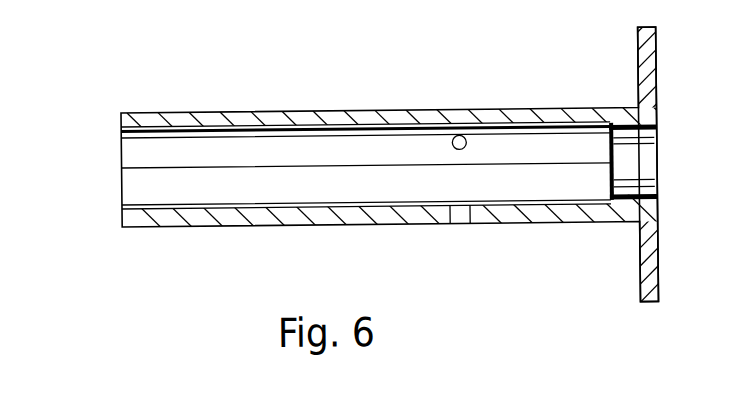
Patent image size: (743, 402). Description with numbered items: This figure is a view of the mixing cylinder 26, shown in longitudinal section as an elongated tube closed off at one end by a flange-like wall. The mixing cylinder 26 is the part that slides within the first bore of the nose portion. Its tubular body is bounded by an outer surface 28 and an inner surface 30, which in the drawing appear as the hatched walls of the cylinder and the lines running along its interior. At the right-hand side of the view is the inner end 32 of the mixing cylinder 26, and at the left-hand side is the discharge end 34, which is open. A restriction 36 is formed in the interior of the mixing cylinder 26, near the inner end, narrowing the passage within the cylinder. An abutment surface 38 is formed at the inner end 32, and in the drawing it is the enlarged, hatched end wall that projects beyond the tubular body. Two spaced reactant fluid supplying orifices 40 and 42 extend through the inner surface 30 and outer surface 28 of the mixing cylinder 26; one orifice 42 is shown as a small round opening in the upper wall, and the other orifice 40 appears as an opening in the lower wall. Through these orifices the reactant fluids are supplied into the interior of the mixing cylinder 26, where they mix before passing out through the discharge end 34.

The mixing cylinder 26 is at (379, 98).
The outer surface 28 is at (213, 113).
The inner surface 30 is at (150, 130).
The inner end 32 is at (653, 178).
The discharge end 34 is at (116, 191).
The restriction 36 is at (590, 133).
The abutment surface 38 is at (657, 92).
The reactant fluid supplying orifice 40 is at (459, 230).
The reactant fluid supplying orifice 42 is at (468, 141).